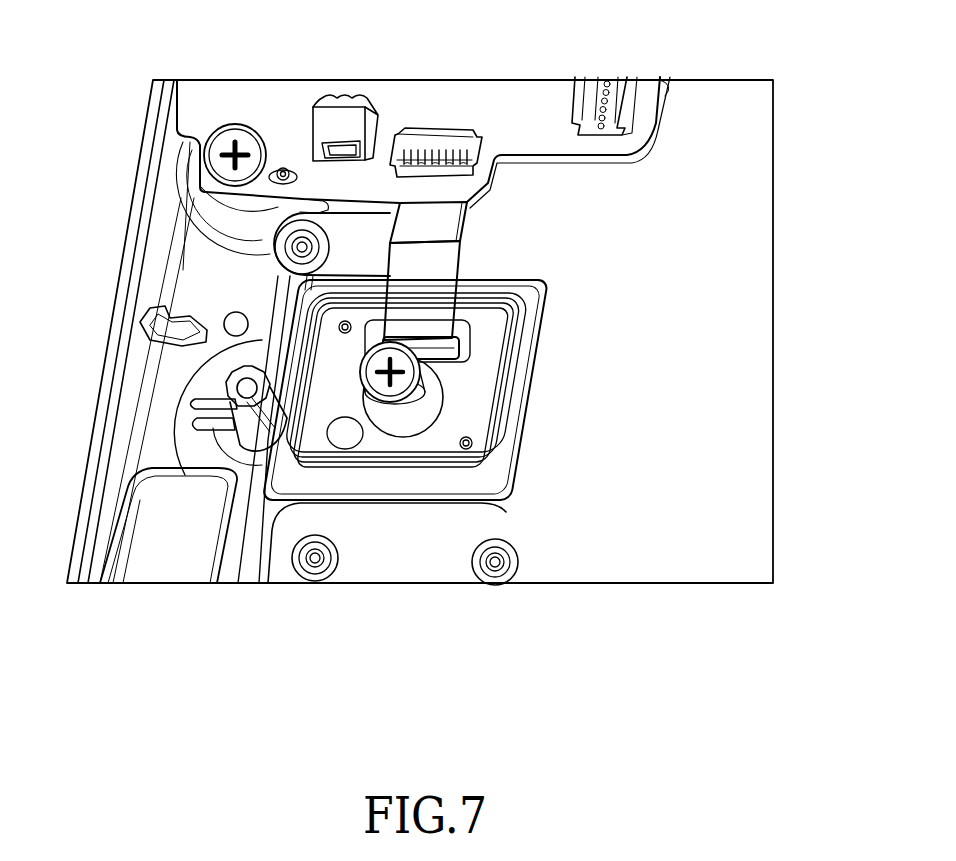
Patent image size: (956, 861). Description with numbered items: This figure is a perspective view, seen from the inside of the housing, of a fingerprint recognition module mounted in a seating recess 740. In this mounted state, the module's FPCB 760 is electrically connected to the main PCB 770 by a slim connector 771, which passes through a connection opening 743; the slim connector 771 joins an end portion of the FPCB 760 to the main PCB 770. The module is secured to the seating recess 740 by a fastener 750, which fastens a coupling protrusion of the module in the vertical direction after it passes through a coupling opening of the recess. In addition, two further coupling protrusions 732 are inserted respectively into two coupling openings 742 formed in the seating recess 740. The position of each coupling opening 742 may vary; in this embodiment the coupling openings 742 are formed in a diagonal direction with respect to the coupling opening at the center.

The coupling protrusion 732 is at (340, 325).
The seating recess 740 is at (468, 395).
The coupling opening 742 is at (347, 360).
The connection opening 743 is at (467, 345).
The fastener 750 is at (372, 380).
The FPCB 760 is at (435, 263).
The main PCB 770 is at (635, 140).
The slim connector 771 is at (435, 137).